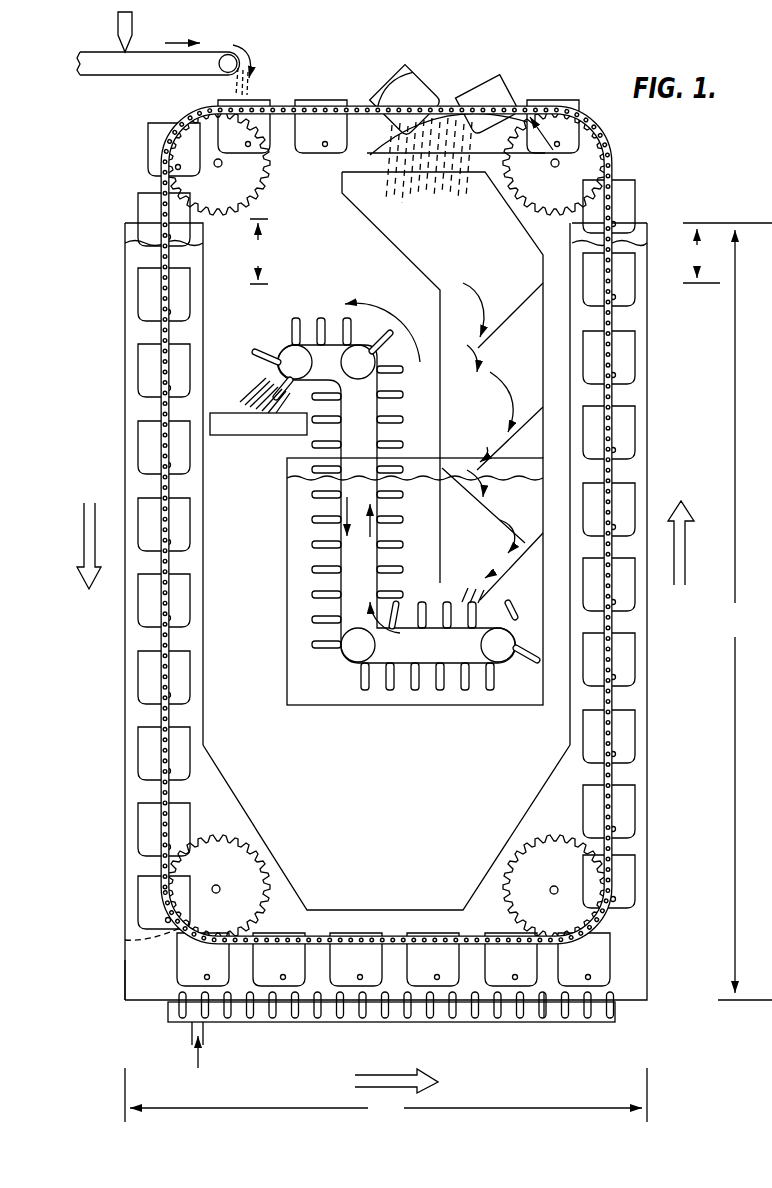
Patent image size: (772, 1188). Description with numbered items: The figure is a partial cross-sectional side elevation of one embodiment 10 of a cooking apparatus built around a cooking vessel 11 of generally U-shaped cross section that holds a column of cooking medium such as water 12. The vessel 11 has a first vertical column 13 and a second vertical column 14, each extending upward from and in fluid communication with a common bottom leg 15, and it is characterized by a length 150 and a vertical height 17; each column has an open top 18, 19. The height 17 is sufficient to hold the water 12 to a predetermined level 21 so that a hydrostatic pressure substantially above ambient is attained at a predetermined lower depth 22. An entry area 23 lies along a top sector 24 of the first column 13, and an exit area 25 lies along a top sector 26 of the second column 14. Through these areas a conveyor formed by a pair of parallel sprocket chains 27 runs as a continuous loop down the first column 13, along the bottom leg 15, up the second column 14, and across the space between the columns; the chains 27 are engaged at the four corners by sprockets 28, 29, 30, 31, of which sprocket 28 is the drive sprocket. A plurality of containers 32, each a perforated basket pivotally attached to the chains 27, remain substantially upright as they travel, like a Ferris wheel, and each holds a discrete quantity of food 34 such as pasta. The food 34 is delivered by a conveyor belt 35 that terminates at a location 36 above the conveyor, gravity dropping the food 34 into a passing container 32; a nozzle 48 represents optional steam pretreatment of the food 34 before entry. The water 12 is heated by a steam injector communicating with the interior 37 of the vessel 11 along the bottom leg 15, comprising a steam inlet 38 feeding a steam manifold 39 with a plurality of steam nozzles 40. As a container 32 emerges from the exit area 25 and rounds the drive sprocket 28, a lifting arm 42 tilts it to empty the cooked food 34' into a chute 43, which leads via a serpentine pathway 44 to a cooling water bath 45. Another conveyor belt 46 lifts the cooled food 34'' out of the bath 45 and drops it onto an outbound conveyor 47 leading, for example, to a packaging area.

The apparatus embodiment 10 is at (86, 769).
The cooking vessel 11 is at (637, 938).
The water 12 is at (615, 401).
The first vertical column 13 is at (139, 725).
The second vertical column 14 is at (620, 656).
The common bottom leg 15 is at (548, 989).
The vertical height 17 is at (727, 611).
The open top of first column 18 is at (131, 223).
The open top of second column 19 is at (642, 223).
The predetermined level 21 is at (143, 243).
The predetermined lower depth 22 is at (125, 941).
The entry area 23 is at (193, 243).
The top sector of first column 24 is at (258, 251).
The exit area 25 is at (630, 244).
The top sector of second column 26 is at (701, 256).
The sprocket chains 27 is at (598, 469).
The drive sprocket 28 is at (542, 199).
The sprocket 29 is at (211, 199).
The sprocket 30 is at (224, 894).
The sprocket 31 is at (521, 879).
The container 32 is at (622, 804).
The food to be cooked 34 is at (261, 48).
The cooked food 34' is at (404, 160).
The cooled food 34'' is at (186, 367).
The conveyor belt 35 is at (167, 74).
The terminating location 36 is at (234, 45).
The vessel interior 37 is at (137, 979).
The steam inlet 38 is at (192, 1037).
The steam manifold 39 is at (288, 1022).
The steam nozzles 40 is at (609, 1003).
The lifting arm 42 is at (447, 88).
The chute 43 is at (468, 206).
The serpentine pathway 44 is at (490, 382).
The cooling water bath 45 is at (300, 678).
The conveyor belt 46 is at (433, 659).
The outbound conveyor 47 is at (210, 426).
The nozzle 48 is at (132, 24).
The length 150 is at (386, 1096).